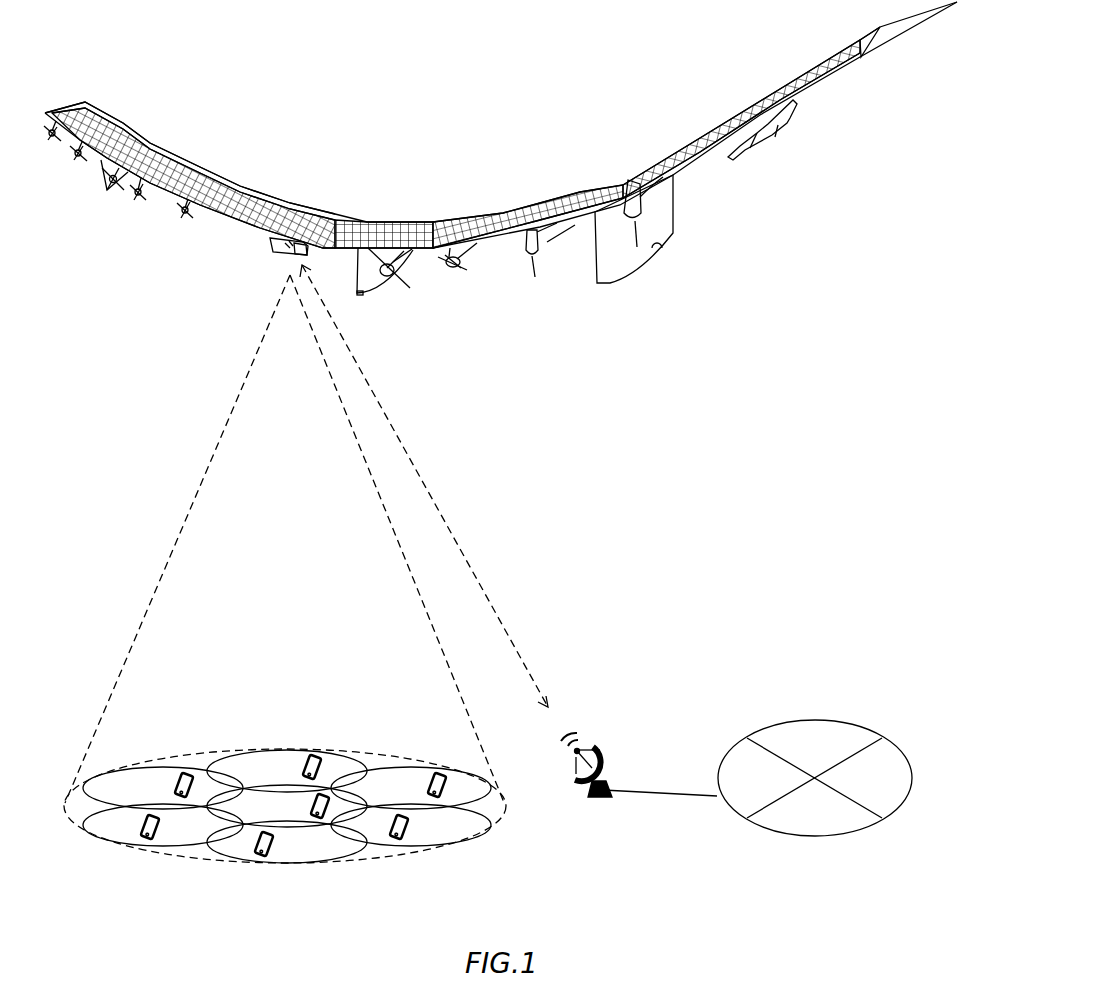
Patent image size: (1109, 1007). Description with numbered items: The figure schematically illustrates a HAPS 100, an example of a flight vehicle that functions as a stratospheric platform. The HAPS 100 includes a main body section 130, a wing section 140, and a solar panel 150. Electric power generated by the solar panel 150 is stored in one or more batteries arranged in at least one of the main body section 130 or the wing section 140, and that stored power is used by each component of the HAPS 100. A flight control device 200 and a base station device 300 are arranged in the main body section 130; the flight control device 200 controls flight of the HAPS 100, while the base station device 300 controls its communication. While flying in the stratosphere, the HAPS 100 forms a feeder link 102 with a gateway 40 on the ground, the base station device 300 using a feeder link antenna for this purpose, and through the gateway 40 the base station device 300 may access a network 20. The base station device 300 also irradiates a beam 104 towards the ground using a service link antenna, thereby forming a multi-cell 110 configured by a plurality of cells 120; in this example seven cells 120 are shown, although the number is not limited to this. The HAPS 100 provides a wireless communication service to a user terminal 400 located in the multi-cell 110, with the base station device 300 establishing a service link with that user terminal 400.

The HAPS 100 is at (84, 51).
The wing section 140 is at (107, 97).
The solar panel 150 is at (196, 164).
The flight control device 200 is at (297, 220).
The main body section 130 is at (270, 245).
The base station device 300 is at (293, 253).
The feeder link 102 is at (409, 454).
The beam 104 is at (202, 488).
The multi-cell 110 is at (380, 738).
The cell 120 is at (282, 760).
The user terminal 400 is at (275, 846).
The gateway 40 is at (610, 762).
The network 20 is at (896, 748).